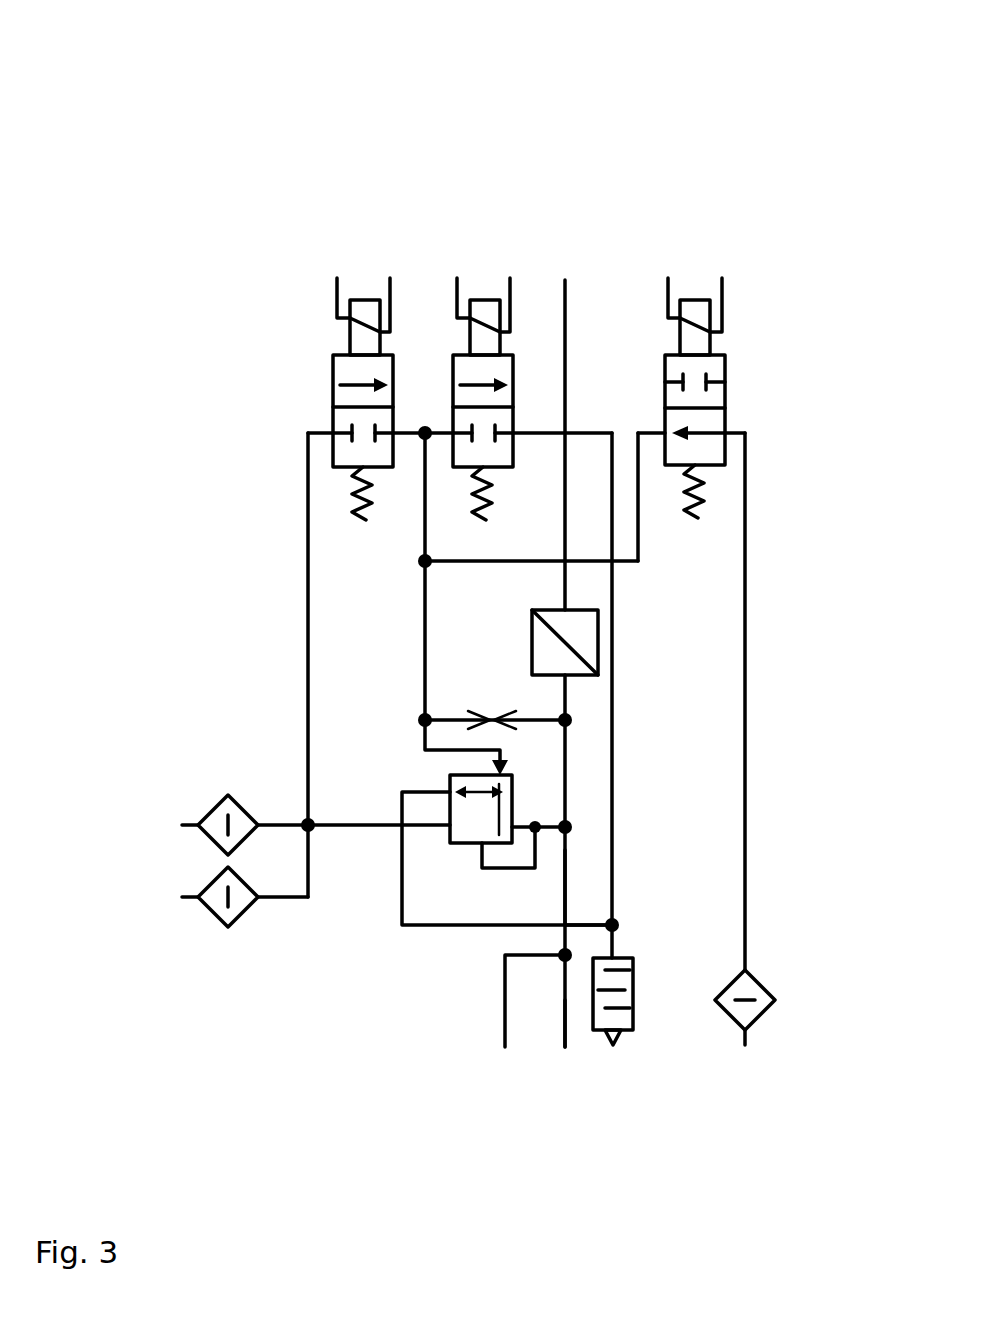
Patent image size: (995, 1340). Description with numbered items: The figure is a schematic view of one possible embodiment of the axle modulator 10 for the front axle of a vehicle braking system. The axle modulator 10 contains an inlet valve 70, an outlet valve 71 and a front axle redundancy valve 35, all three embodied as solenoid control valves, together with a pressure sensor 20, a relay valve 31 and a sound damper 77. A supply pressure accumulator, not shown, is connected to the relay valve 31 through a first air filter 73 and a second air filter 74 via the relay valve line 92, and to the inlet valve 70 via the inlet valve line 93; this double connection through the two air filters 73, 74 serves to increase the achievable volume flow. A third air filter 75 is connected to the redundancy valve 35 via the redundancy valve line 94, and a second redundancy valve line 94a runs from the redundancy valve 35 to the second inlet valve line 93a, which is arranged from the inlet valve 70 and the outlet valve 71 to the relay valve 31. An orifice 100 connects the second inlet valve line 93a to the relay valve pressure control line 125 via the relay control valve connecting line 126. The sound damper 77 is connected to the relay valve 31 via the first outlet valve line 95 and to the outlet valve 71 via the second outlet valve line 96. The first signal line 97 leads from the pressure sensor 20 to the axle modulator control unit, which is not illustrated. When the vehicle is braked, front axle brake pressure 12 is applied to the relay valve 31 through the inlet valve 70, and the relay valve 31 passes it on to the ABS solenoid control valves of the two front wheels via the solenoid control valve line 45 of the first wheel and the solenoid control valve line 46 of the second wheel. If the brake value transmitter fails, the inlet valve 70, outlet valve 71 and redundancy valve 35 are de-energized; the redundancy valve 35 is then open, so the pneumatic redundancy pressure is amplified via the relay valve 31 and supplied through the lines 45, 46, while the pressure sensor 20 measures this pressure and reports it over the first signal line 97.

The axle modulator 10 is at (319, 84).
The front axle brake pressure 12 is at (435, 927).
The pressure sensor 20 is at (532, 645).
The relay valve 31 is at (462, 838).
The front axle redundancy valve 35 is at (693, 300).
The solenoid control valve line of the first wheel 45 is at (505, 1047).
The solenoid control valve line of the second wheel 46 is at (563, 1047).
The inlet valve 70 is at (333, 365).
The outlet valve 71 is at (472, 300).
The first air filter 73 is at (213, 809).
The second air filter 74 is at (190, 897).
The third air filter 75 is at (748, 1030).
The sound damper 77 is at (613, 1045).
The relay valve line 92 is at (355, 832).
The inlet valve line 93 is at (308, 678).
The second inlet valve line 93a is at (425, 645).
The redundancy valve line 94 is at (745, 853).
The second redundancy valve line 94a is at (640, 523).
The first outlet valve line 95 is at (470, 927).
The second outlet valve line 96 is at (615, 748).
The first signal line 97 is at (565, 280).
The orifice 100 is at (565, 708).
The relay valve pressure control line 125 is at (567, 876).
The relay control valve connecting line 126 is at (565, 827).